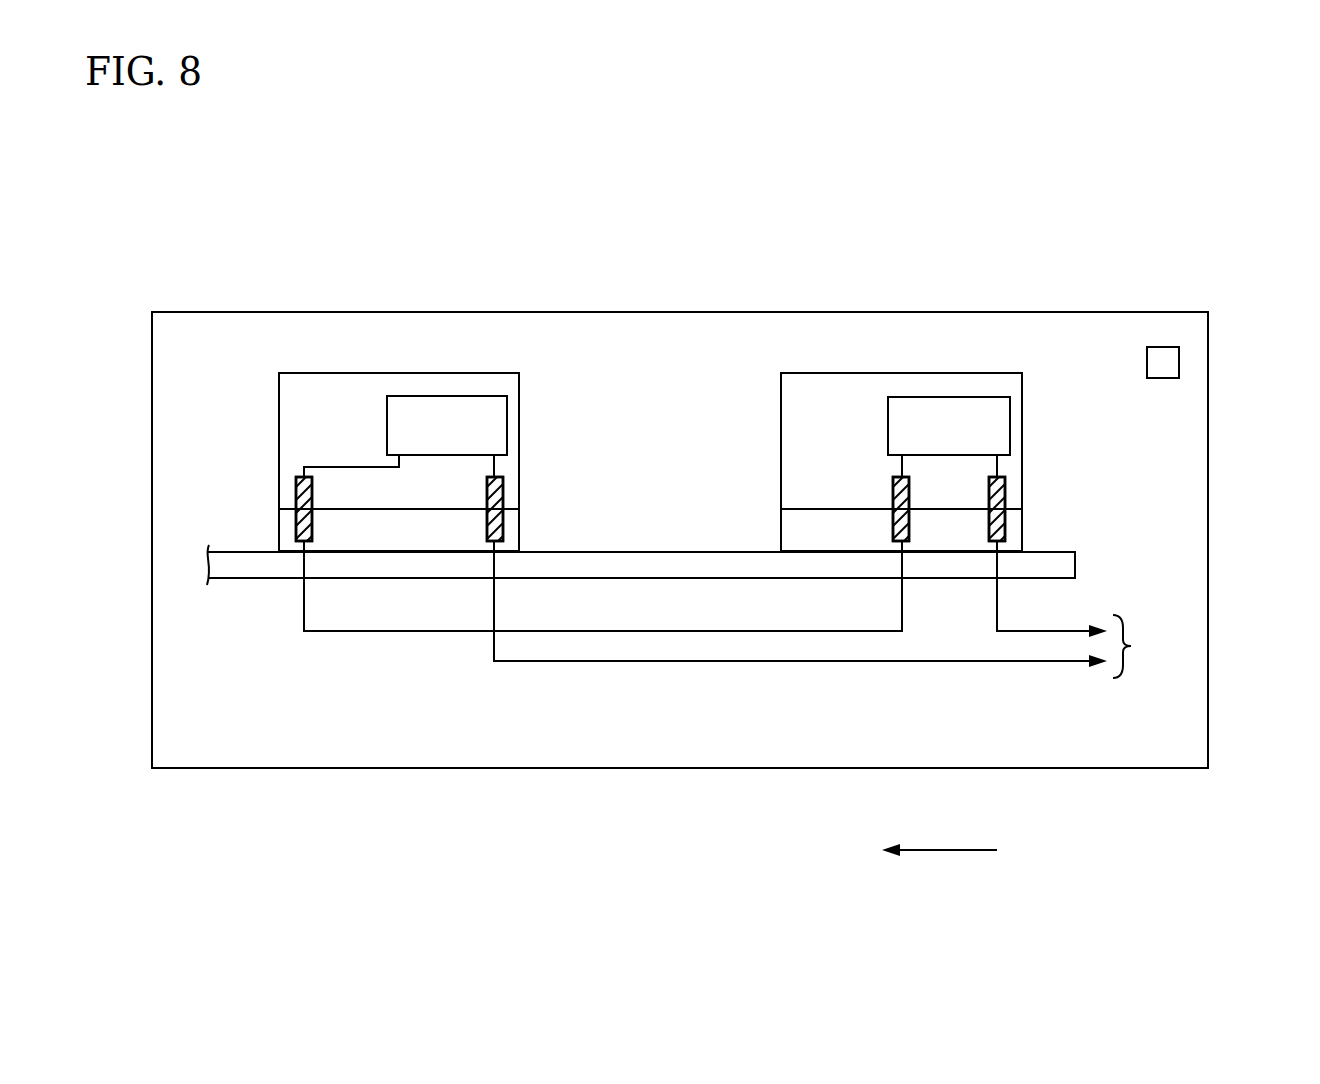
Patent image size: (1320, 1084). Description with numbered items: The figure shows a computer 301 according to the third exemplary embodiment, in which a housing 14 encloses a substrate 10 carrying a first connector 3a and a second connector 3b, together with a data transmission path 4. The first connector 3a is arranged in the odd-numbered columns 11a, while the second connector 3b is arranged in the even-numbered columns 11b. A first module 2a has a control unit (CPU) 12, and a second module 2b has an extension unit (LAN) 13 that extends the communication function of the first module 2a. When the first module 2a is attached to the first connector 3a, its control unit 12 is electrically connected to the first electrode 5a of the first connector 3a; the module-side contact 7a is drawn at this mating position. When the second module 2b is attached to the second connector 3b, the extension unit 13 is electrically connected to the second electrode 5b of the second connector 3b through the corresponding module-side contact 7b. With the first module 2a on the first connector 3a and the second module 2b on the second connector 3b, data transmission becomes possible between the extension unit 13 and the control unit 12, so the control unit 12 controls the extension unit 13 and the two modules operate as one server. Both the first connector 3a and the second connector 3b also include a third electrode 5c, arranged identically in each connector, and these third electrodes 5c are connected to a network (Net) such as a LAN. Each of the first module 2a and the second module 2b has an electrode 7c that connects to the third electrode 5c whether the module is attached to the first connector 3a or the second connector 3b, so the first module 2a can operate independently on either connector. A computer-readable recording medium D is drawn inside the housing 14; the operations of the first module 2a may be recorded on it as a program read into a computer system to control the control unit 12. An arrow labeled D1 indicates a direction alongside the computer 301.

The computer 301 is at (749, 210).
The housing 14 is at (1208, 335).
The substrate 10 is at (628, 565).
The data transmission path 4 is at (453, 632).
The network Net is at (1135, 646).
The second module 2b is at (309, 385).
The extension unit 13 is at (455, 396).
The even-numbered columns 11b is at (412, 322).
The connector terminal 7b is at (293, 492).
The second electrode 5b is at (293, 526).
The electrode 7c is at (506, 491).
The third electrode 5c is at (506, 532).
The second connector 3b is at (284, 562).
The first module 2a is at (982, 383).
The odd-numbered columns 11a is at (845, 336).
The control unit 12 is at (949, 392).
The connector terminal 7a is at (890, 492).
The first electrode 5a is at (890, 526).
The first connector 3a is at (1017, 545).
The computer-readable recording medium D is at (1164, 378).
The direction D1 is at (948, 852).